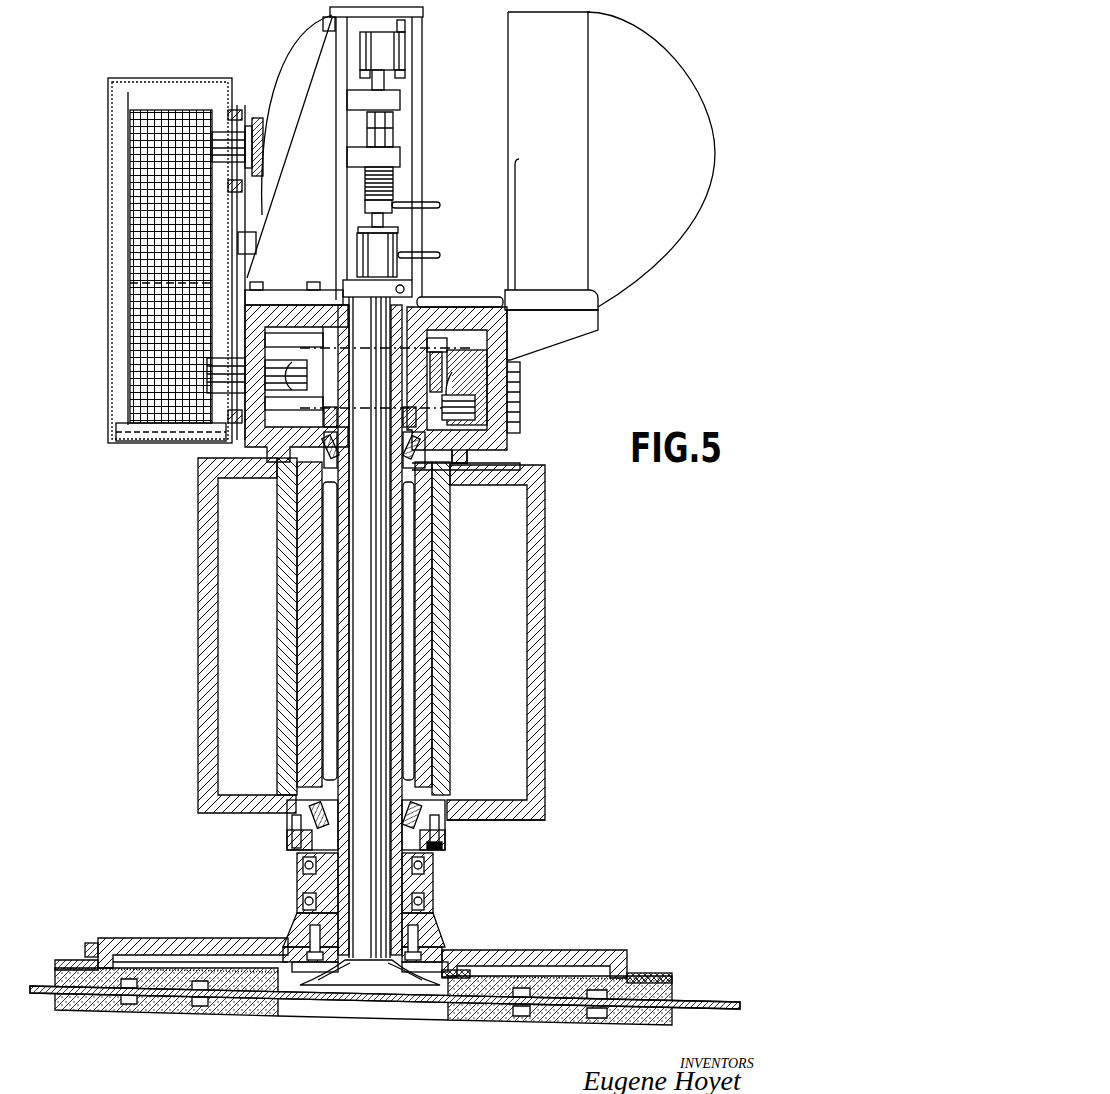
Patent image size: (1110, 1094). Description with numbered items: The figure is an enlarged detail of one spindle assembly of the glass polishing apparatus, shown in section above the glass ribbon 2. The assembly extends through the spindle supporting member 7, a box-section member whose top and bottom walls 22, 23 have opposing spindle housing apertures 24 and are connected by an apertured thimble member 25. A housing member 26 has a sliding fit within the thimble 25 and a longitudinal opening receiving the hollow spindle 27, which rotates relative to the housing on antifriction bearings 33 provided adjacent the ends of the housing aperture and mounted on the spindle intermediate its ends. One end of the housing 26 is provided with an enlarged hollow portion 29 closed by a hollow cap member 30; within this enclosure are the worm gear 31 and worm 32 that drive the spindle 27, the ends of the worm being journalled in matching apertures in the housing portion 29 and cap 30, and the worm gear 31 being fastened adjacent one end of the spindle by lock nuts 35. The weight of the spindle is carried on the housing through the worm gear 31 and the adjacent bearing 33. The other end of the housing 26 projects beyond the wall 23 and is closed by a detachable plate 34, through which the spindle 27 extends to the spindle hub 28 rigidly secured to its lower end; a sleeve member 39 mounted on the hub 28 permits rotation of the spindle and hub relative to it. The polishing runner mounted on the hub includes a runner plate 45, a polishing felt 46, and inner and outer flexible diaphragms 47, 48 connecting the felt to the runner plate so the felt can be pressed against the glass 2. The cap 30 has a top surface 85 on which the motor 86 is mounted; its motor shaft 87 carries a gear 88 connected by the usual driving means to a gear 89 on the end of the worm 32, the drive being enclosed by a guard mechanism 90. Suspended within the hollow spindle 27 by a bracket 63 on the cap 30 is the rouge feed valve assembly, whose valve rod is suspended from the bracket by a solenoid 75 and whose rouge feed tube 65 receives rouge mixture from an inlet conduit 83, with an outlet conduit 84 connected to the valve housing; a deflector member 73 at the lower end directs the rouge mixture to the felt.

The glass ribbon 2 is at (706, 1000).
The spindle supporting member 7 is at (386, 662).
The top wall 22 is at (480, 470).
The bottom wall 23 is at (528, 820).
The spindle housing apertures 24 is at (463, 463).
The thimble member 25 is at (462, 603).
The housing member 26 is at (450, 529).
The hollow spindle 27 is at (400, 560).
The spindle hub 28 is at (440, 930).
The enlarged hollow portion 29 is at (507, 396).
The hollow cap member 30 is at (507, 362).
The worm gear 31 is at (450, 372).
The worm 32 is at (222, 380).
The antifriction bearings 33 is at (320, 455).
The detachable plate 34 is at (443, 845).
The lock nuts 35 is at (443, 308).
The sleeve member 39 is at (433, 885).
The runner plate 45 is at (172, 938).
The polishing felt 46 is at (96, 984).
The inner flexible diaphragm 47 is at (447, 968).
The outer flexible diaphragm 48 is at (650, 975).
The bracket 63 is at (297, 163).
The rouge feed tube 65 is at (380, 663).
The deflector member 73 is at (353, 975).
The solenoid 75 is at (405, 50).
The rouge mixture inlet conduit 83 is at (430, 202).
The rouge mixture outlet conduit 84 is at (430, 253).
The top surface 85 is at (453, 300).
The motor 86 is at (488, 100).
The motor shaft 87 is at (222, 132).
The gear 88 is at (153, 110).
The gear 89 is at (135, 428).
The guard mechanism 90 is at (118, 238).